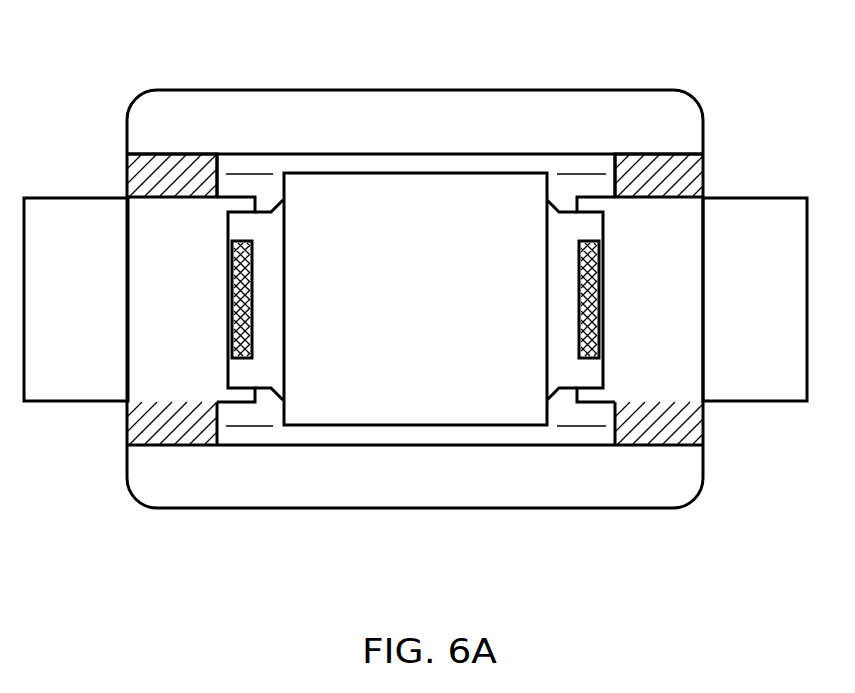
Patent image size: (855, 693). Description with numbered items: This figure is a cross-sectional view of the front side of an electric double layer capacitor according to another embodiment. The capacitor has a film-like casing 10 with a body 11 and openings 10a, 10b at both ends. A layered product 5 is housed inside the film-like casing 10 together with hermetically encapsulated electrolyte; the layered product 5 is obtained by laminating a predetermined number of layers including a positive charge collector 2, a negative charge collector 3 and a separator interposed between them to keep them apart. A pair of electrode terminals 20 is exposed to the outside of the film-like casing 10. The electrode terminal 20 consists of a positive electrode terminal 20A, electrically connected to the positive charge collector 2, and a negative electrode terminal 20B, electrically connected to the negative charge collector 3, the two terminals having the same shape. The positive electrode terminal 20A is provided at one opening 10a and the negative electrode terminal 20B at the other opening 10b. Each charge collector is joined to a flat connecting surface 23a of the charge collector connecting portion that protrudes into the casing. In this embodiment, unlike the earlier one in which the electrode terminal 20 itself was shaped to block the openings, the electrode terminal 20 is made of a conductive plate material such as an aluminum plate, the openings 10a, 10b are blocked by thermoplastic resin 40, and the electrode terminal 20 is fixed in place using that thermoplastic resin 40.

The film-like casing 10 is at (275, 88).
The opening 10a is at (182, 158).
The opening 10b is at (665, 157).
The housing body 11 is at (412, 113).
The positive charge collector 2 is at (275, 381).
The negative charge collector 3 is at (553, 375).
The layered product 5 is at (478, 432).
The connecting surface 23a is at (594, 240).
The thermoplastic resin 40 is at (158, 432).
The electrode terminal 20 is at (415, 373).
The positive electrode terminal 20A is at (65, 403).
The negative electrode terminal 20B is at (765, 402).